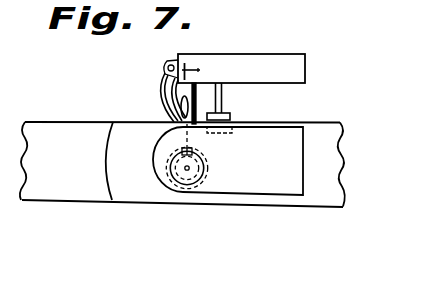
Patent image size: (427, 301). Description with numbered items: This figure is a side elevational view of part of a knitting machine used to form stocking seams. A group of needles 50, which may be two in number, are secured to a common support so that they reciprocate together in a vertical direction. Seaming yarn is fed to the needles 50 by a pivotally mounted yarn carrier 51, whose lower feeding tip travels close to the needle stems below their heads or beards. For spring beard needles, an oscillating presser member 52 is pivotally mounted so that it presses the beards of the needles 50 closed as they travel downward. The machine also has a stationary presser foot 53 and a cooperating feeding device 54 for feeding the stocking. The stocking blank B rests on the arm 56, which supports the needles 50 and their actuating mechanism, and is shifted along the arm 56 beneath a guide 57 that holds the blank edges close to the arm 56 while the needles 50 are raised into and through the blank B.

The stocking blank B is at (74, 194).
The needles 50 is at (170, 117).
The yarn carrier 51 is at (164, 77).
The presser member 52 is at (163, 95).
The stationary presser foot 53 is at (232, 116).
The feeding device 54 is at (233, 134).
The arm 56 is at (270, 187).
The guide 57 is at (197, 109).